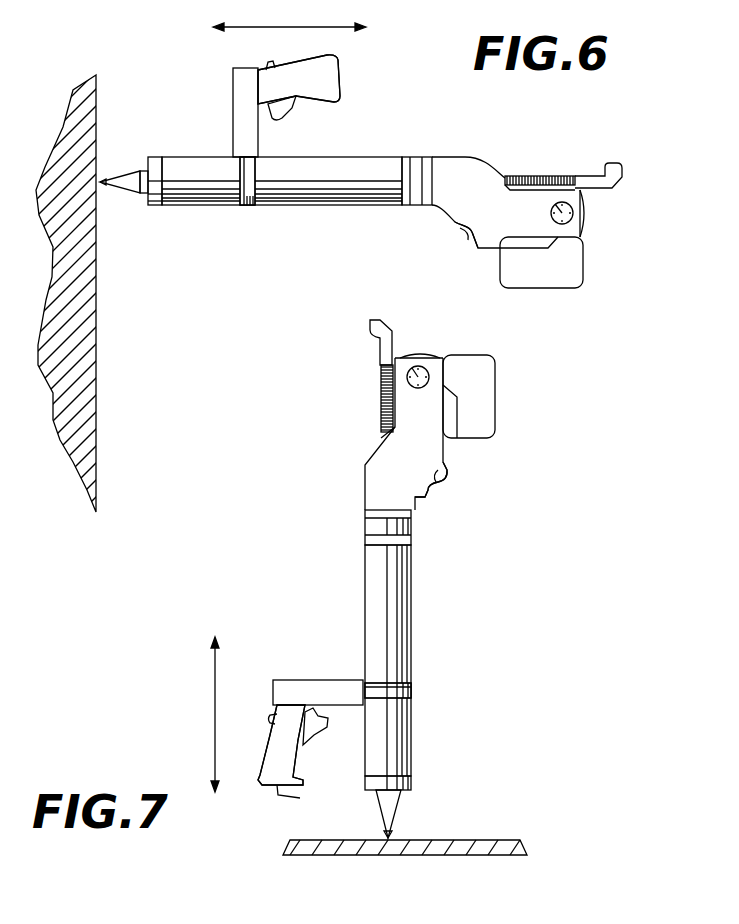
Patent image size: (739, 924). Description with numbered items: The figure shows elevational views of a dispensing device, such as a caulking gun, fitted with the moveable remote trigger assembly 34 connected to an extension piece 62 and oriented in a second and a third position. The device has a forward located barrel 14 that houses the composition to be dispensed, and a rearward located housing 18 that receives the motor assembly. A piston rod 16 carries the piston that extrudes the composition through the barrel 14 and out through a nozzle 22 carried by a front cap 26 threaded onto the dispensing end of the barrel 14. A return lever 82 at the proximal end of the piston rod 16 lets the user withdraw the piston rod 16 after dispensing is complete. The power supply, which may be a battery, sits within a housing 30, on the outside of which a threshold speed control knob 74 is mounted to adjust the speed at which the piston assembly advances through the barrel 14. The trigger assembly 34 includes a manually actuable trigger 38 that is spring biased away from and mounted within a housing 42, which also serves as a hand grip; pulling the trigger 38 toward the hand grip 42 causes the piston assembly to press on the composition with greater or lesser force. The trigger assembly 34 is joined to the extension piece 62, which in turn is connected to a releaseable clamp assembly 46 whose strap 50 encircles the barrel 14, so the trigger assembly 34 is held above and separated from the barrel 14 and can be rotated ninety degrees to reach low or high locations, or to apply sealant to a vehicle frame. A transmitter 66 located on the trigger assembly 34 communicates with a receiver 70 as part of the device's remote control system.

In FIG. 6, the barrel 14 is at (372, 165).
In FIG. 7, the barrel 14 is at (375, 572).
In FIG. 6, the piston rod 16 is at (507, 178).
In FIG. 7, the piston rod 16 is at (381, 410).
In FIG. 6, the housing 18 is at (462, 168).
In FIG. 7, the housing 18 is at (378, 470).
In FIG. 6, the nozzle 22 is at (126, 182).
In FIG. 7, the nozzle 22 is at (400, 806).
In FIG. 6, the front cap 26 is at (152, 205).
In FIG. 7, the front cap 26 is at (412, 783).
In FIG. 6, the housing 30 is at (538, 271).
In FIG. 7, the housing 30 is at (490, 416).
In FIG. 6, the trigger assembly 34 is at (352, 64).
In FIG. 7, the trigger assembly 34 is at (260, 793).
In FIG. 6, the trigger 38 is at (292, 112).
In FIG. 7, the trigger 38 is at (325, 727).
In FIG. 6, the housing 42 is at (312, 72).
In FIG. 7, the housing 42 is at (280, 788).
In FIG. 6, the clamp assembly 46 is at (241, 212).
In FIG. 7, the clamp assembly 46 is at (430, 677).
In FIG. 6, the strap 50 is at (250, 206).
In FIG. 7, the strap 50 is at (410, 690).
In FIG. 6, the extension piece 62 is at (241, 113).
In FIG. 7, the extension piece 62 is at (315, 680).
In FIG. 6, the transmitter 66 is at (272, 64).
In FIG. 7, the transmitter 66 is at (270, 718).
In FIG. 6, the receiver 70 is at (455, 220).
In FIG. 7, the receiver 70 is at (440, 495).
In FIG. 6, the threshold speed control knob 74 is at (562, 205).
In FIG. 7, the threshold speed control knob 74 is at (418, 366).
In FIG. 6, the return lever 82 is at (614, 168).
In FIG. 7, the return lever 82 is at (376, 322).